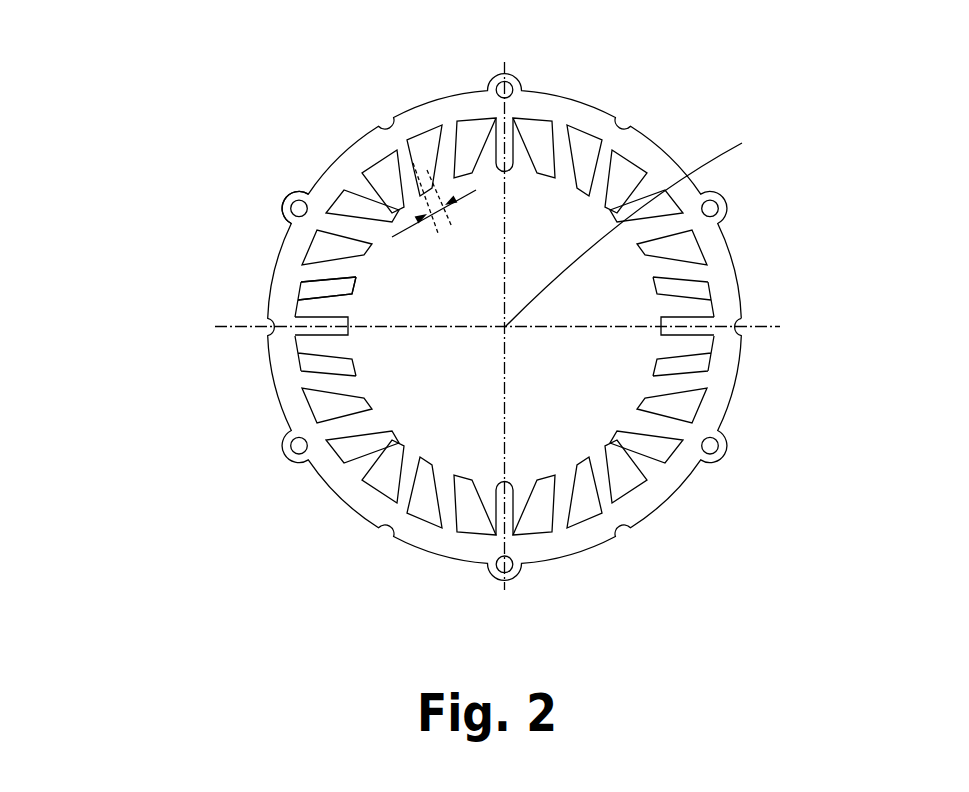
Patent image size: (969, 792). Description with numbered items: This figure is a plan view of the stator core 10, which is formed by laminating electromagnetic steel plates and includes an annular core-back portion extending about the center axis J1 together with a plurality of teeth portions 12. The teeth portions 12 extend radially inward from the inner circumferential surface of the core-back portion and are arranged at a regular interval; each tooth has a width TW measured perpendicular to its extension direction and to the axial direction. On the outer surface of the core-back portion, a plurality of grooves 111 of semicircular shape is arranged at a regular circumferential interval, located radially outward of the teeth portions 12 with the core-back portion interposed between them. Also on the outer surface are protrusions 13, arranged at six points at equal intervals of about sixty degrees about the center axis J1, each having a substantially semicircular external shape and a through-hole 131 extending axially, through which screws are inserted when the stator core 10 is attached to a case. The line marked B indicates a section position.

The stator core 10 is at (147, 129).
The grooves 111 is at (620, 123).
The teeth portions 12 is at (262, 272).
The protrusions 13 is at (289, 189).
The through-hole 131 is at (288, 204).
The center axis J1 is at (638, 218).
The width of each of the teeth portions TW is at (434, 215).
The section line B- B is at (497, 328).